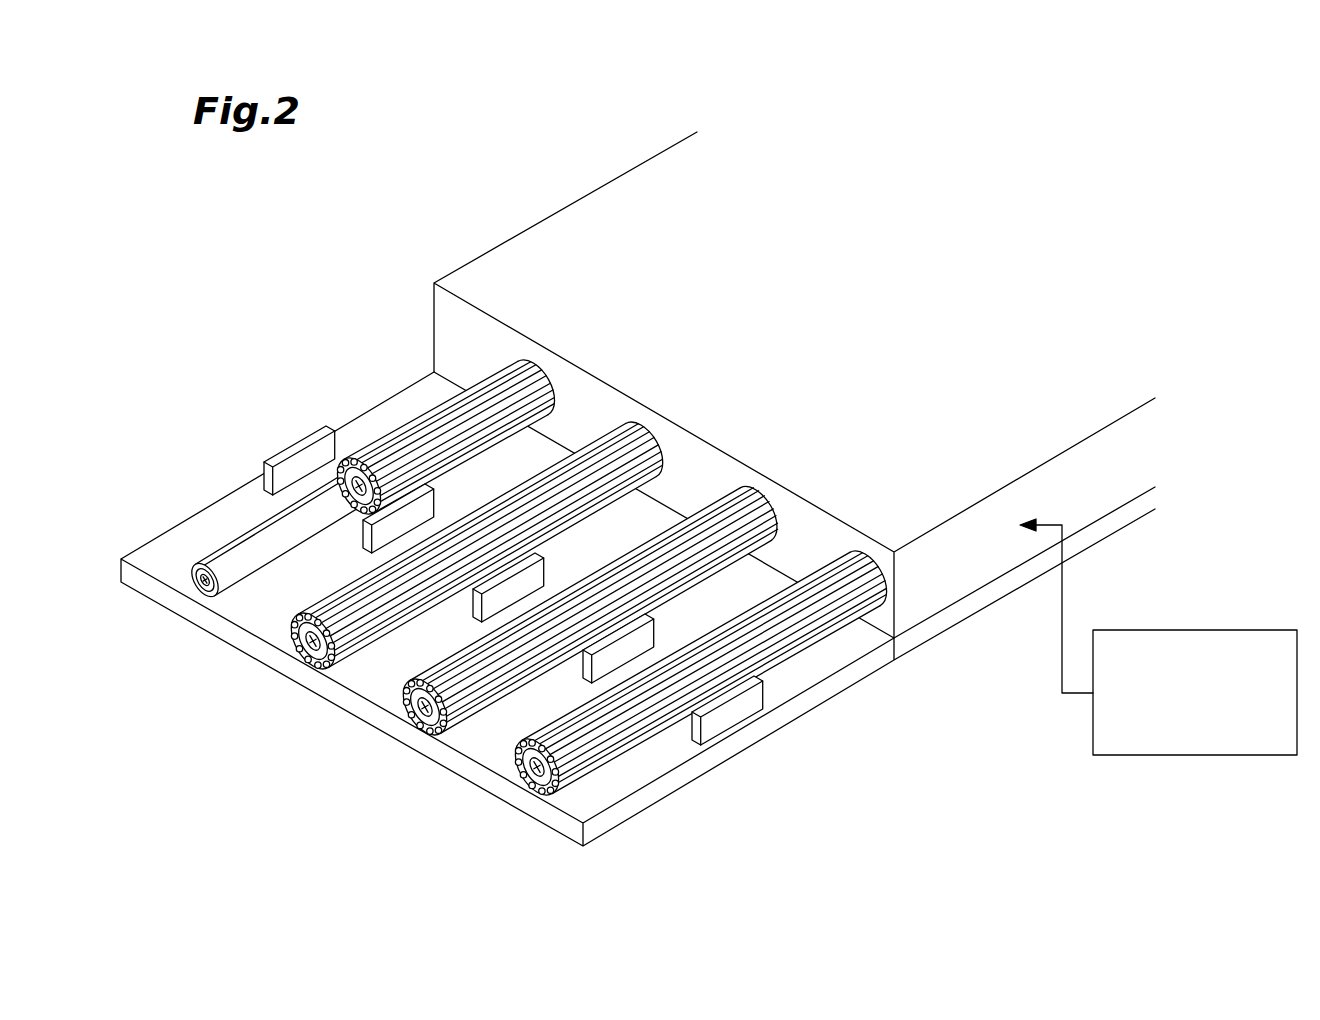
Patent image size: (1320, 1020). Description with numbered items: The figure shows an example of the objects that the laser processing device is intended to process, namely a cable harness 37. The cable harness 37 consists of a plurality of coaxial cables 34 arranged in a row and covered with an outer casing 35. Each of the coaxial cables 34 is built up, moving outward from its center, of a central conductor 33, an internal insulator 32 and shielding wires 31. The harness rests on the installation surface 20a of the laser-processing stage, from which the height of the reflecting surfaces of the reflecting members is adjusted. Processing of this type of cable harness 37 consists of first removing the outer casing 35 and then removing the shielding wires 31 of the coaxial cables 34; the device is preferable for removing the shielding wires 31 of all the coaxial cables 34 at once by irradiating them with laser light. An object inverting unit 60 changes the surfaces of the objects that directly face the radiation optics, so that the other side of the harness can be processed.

The installation surface 20a is at (790, 689).
The shielding wires 31 is at (368, 443).
The internal insulator 32 is at (195, 566).
The central conductor 33 is at (200, 582).
The coaxial cables 34 is at (332, 364).
The outer casing 35 is at (560, 237).
The cable harness 37 is at (315, 312).
The object inverting unit 60 is at (1242, 630).